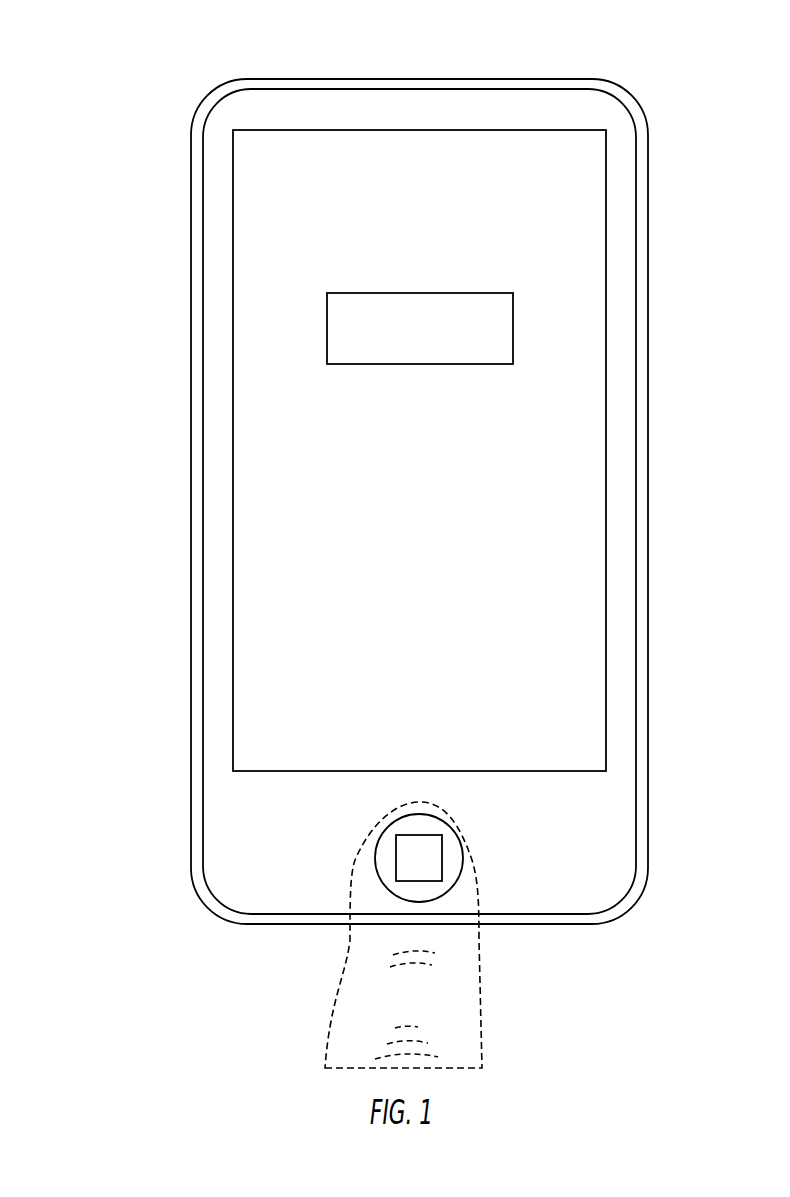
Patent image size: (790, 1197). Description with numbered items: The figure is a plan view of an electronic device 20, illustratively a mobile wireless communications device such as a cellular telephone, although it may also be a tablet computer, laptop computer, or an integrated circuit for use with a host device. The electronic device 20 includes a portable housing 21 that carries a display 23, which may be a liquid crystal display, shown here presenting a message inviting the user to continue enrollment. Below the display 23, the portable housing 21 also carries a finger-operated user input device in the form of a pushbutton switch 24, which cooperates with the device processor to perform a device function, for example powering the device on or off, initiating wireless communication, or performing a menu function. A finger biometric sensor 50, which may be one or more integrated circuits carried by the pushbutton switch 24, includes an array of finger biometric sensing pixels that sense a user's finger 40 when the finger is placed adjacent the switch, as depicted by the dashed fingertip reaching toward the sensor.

The electronic device 20 is at (178, 87).
The portable housing 21 is at (191, 255).
The display 23 is at (233, 351).
The pushbutton switch 24 is at (463, 857).
The user's finger 40 is at (350, 940).
The finger biometric sensor 50 is at (437, 889).